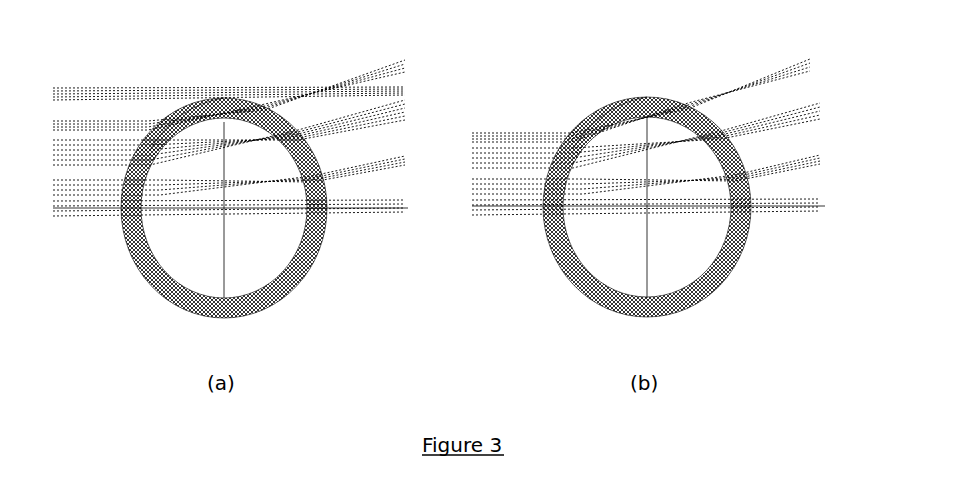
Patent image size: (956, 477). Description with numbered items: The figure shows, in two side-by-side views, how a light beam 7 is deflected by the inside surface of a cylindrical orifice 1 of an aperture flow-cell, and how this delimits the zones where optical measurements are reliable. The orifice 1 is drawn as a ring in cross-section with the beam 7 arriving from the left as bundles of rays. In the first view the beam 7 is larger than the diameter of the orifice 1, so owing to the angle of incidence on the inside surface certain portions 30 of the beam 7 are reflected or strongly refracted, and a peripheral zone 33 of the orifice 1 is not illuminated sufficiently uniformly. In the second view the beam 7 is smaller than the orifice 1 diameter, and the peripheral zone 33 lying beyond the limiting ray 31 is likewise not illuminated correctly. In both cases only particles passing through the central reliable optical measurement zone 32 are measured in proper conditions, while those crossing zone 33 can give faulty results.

The orifice 1 is at (272, 300).
The light beam 7 is at (82, 163).
The portions of the beam 30 is at (142, 127).
The limiting ray 31 is at (553, 145).
The reliable optical measurement zone 32 is at (268, 258).
The peripheral zone 33 is at (313, 237).